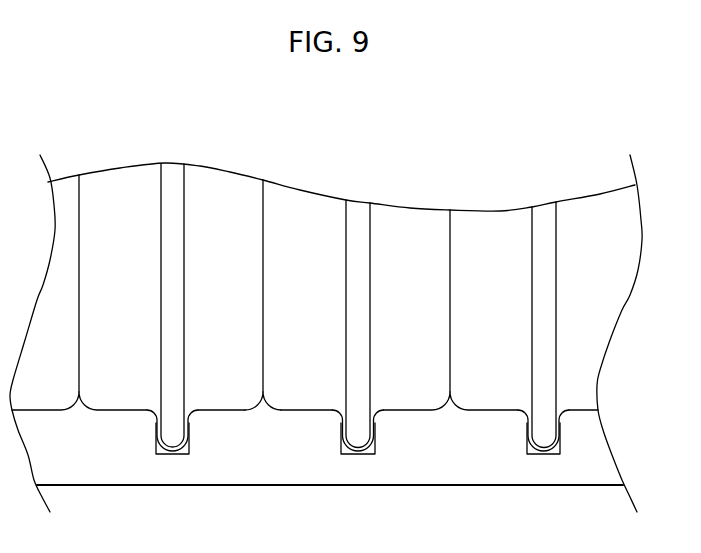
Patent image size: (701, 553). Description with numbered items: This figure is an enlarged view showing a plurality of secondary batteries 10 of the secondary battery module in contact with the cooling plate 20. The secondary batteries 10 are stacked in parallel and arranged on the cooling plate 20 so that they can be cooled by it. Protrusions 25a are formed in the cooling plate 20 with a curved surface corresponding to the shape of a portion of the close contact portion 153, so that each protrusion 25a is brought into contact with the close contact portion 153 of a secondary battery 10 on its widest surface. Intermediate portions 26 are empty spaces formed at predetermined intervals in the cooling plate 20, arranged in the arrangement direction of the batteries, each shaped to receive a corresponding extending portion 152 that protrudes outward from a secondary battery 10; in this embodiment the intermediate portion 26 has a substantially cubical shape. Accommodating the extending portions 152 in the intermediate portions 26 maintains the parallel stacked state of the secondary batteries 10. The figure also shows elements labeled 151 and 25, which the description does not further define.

The secondary battery 10 is at (223, 197).
The slot wall 151 is at (548, 256).
The close contact portion 153 is at (303, 408).
The extending portion 152 is at (172, 410).
The cooling plate 20 is at (201, 485).
The protrusion 25a is at (268, 410).
The support member 25 is at (312, 450).
The intermediate portion 26 is at (543, 450).